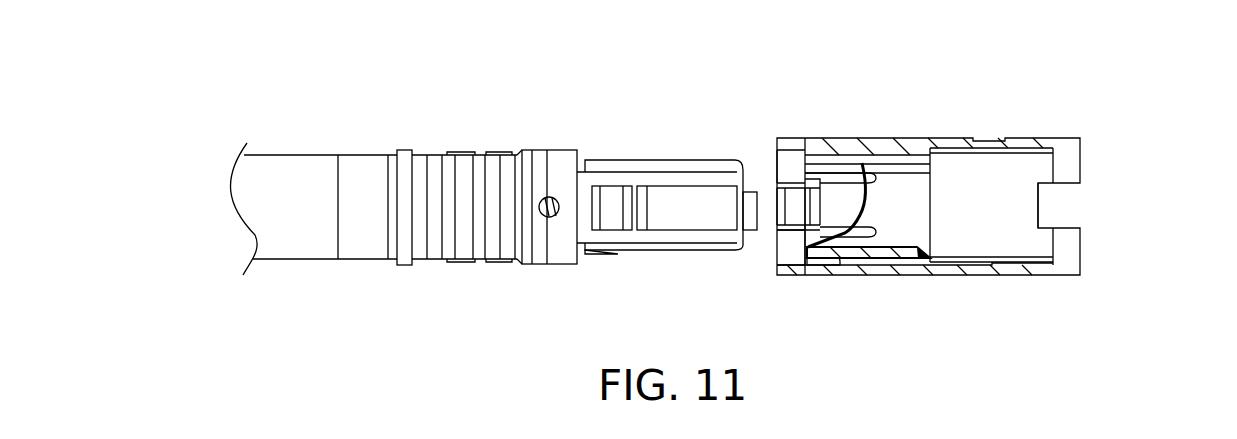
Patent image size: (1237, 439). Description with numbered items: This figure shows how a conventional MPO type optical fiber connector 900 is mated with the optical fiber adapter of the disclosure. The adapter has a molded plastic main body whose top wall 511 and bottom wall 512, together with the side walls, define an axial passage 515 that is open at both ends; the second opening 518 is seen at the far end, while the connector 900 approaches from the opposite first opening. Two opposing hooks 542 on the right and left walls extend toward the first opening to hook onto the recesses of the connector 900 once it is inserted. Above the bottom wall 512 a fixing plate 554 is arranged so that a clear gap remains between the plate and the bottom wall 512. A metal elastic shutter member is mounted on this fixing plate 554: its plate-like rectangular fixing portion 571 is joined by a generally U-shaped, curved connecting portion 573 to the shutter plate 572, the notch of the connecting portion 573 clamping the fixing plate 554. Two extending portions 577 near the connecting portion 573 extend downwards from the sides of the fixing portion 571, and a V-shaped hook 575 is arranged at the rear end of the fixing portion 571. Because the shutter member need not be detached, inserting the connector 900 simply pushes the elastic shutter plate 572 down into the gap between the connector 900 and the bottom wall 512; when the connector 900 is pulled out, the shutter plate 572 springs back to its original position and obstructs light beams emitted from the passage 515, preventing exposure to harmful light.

The optical fiber connector 900 is at (416, 112).
The top wall 511 is at (898, 138).
The bottom wall 512 is at (922, 273).
The passage 515 is at (915, 197).
The second opening 518 is at (1062, 206).
The hook 542 is at (795, 205).
The fixing plate 554 is at (847, 257).
The fixing portion 571 is at (875, 258).
The shutter plate 572 is at (843, 205).
The connecting portion 573 is at (806, 257).
The V-shaped hook 575 is at (930, 258).
The extending portion 577 is at (820, 265).